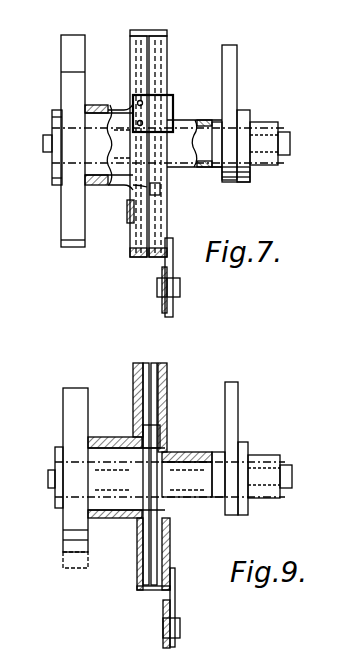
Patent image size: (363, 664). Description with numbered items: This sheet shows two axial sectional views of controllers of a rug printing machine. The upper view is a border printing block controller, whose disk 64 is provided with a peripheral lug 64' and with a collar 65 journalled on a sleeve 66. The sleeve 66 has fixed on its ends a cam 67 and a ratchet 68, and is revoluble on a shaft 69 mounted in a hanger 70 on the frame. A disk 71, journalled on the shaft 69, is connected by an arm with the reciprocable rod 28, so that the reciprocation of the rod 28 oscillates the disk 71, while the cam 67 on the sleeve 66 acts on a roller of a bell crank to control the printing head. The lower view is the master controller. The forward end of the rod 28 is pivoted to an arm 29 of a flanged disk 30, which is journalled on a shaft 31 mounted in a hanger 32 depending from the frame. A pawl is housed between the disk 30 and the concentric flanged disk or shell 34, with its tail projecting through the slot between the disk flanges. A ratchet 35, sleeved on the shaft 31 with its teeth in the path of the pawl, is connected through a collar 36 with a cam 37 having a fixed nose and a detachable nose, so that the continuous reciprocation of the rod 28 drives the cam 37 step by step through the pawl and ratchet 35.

In FIG. 7, the cam 67 is at (66, 52).
In FIG. 7, the collar 65 is at (103, 107).
In FIG. 7, the disk 64 is at (124, 134).
In FIG. 7, the ratchet 68 is at (165, 56).
In FIG. 7, the disk 71 is at (156, 33).
In FIG. 7, the peripheral lug 64' is at (170, 97).
In FIG. 7, the shaft 69 is at (200, 128).
In FIG. 7, the hanger 70 is at (232, 85).
In FIG. 7, the sleeve 66 is at (108, 186).
In FIG. 7, the reciprocable rod 28 is at (172, 317).
In FIG. 9, the reciprocable rod 28 is at (163, 645).
In FIG. 9, the concentric flanged disk or shell 34 is at (143, 366).
In FIG. 9, the cam 37 is at (70, 422).
In FIG. 9, the collar 36 is at (118, 522).
In FIG. 9, the ratchet 35 is at (132, 530).
In FIG. 9, the flanged disk 30 is at (168, 398).
In FIG. 9, the shaft 31 is at (183, 470).
In FIG. 9, the hanger 32 is at (235, 437).
In FIG. 9, the arm 29 is at (172, 600).